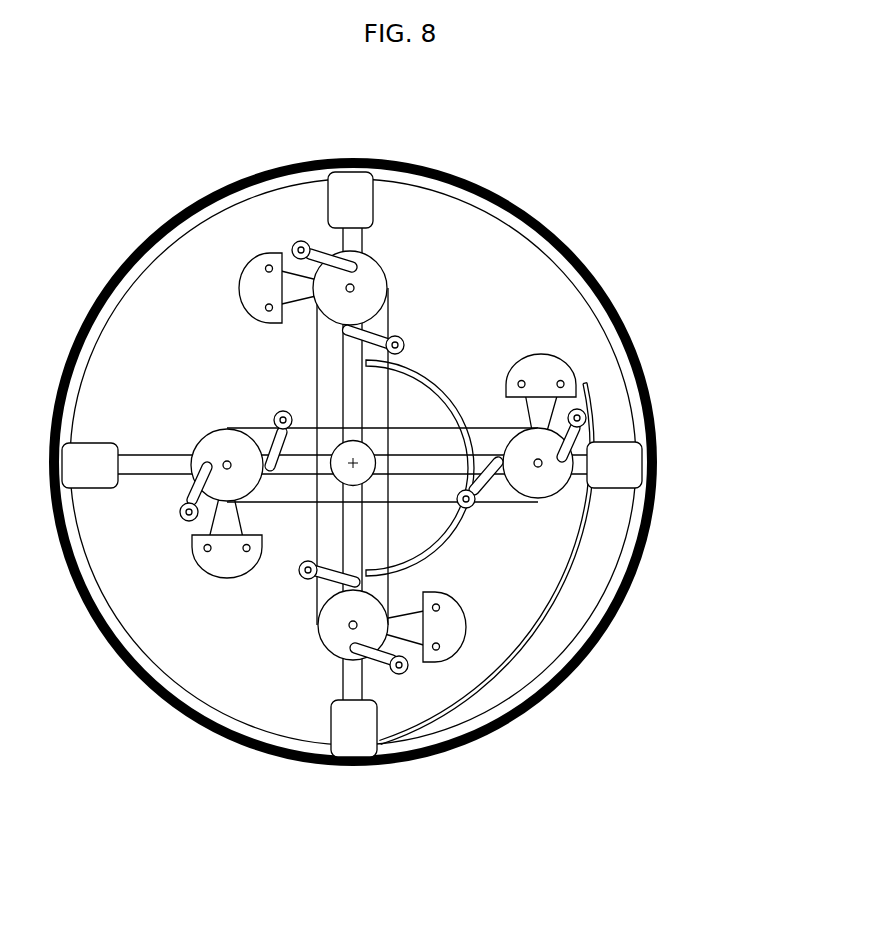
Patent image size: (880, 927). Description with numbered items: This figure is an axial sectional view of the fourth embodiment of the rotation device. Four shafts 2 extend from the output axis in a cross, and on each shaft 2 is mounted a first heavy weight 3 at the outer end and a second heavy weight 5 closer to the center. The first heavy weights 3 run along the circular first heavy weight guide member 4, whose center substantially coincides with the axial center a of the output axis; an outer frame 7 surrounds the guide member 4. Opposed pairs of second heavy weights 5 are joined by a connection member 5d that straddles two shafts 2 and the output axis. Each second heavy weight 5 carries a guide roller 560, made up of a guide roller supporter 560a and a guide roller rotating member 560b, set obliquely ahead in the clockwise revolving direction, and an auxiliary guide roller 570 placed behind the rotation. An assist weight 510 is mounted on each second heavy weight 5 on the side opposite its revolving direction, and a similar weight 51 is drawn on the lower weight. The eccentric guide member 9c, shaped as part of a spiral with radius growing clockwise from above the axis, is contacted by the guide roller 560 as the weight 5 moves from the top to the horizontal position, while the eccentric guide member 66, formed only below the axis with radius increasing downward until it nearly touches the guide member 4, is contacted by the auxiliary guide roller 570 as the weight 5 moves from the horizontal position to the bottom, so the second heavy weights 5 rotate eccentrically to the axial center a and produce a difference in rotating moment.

The first heavy weight 3 is at (350, 187).
The outer ring 7 is at (465, 180).
The first heavy weight guide member 4 is at (480, 210).
The second heavy weight 5 is at (372, 275).
The shaft 2 is at (352, 385).
The connection member 5d is at (317, 355).
The auxiliary guide roller 570 is at (332, 238).
The guide roller 560 is at (383, 454).
The guide roller supporter 560a is at (480, 487).
The guide roller rotating member 560b is at (495, 488).
The assist weight 510 is at (251, 287).
The cam 51 is at (458, 622).
The eccentric guide member 9c is at (420, 362).
The eccentric guide member 66 is at (487, 688).
The axial center a is at (357, 468).